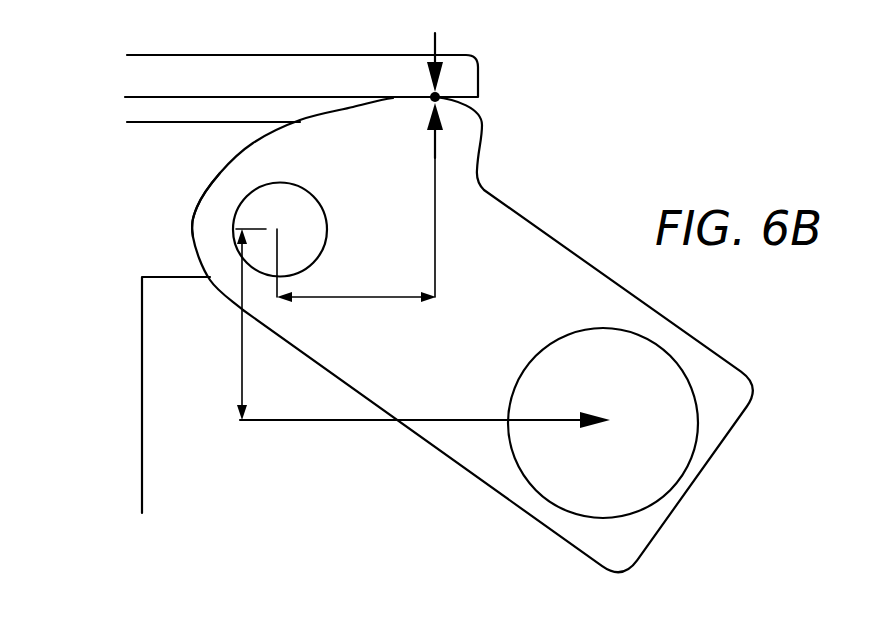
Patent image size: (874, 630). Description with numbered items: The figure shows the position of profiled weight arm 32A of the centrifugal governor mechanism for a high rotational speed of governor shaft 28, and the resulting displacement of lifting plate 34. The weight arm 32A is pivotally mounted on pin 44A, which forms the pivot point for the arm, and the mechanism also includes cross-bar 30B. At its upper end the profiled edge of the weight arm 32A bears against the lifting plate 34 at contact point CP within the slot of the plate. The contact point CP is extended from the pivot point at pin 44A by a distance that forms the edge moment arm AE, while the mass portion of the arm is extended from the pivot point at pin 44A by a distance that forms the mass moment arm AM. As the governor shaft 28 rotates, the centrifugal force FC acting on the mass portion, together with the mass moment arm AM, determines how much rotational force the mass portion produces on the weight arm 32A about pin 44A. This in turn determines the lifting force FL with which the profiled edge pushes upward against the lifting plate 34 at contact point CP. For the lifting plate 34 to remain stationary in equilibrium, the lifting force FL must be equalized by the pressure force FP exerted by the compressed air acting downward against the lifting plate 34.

The lifting plate 34 is at (453, 67).
The profiled weight arm 32A is at (543, 243).
The pin 44A is at (268, 205).
The cross-bar 30B is at (187, 258).
The governor shaft 28 is at (127, 382).
The contact point CP is at (442, 90).
The pressure force FP is at (434, 42).
The lifting force FL is at (438, 142).
The centrifugal force FC is at (565, 418).
The edge moment arm AE is at (356, 215).
The mass moment arm AM is at (258, 324).